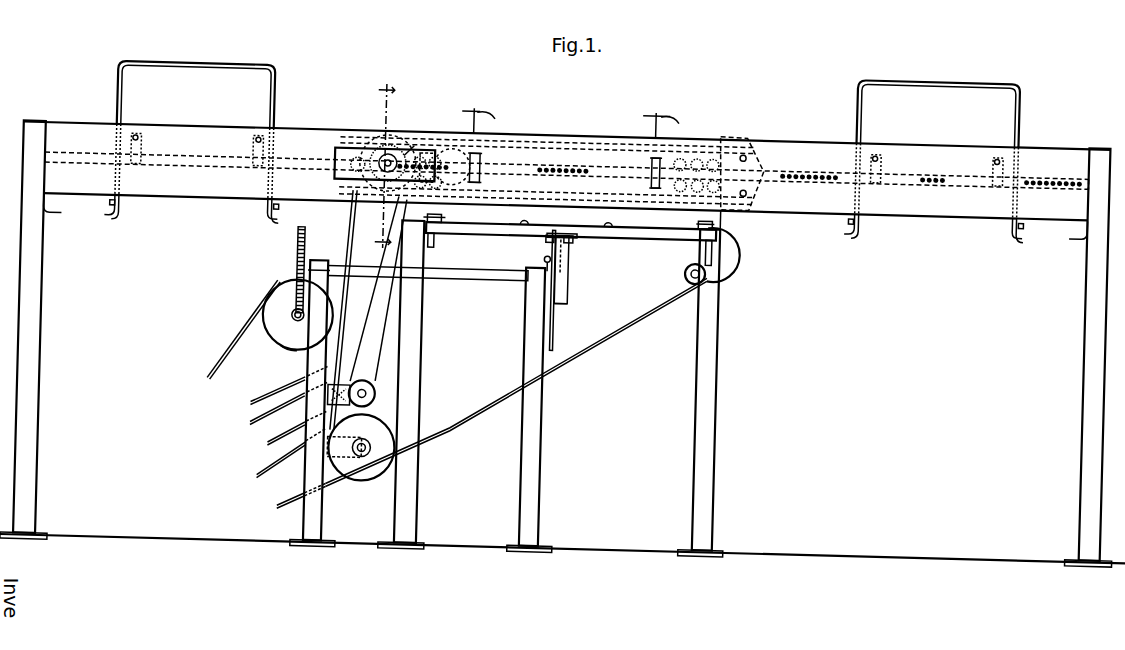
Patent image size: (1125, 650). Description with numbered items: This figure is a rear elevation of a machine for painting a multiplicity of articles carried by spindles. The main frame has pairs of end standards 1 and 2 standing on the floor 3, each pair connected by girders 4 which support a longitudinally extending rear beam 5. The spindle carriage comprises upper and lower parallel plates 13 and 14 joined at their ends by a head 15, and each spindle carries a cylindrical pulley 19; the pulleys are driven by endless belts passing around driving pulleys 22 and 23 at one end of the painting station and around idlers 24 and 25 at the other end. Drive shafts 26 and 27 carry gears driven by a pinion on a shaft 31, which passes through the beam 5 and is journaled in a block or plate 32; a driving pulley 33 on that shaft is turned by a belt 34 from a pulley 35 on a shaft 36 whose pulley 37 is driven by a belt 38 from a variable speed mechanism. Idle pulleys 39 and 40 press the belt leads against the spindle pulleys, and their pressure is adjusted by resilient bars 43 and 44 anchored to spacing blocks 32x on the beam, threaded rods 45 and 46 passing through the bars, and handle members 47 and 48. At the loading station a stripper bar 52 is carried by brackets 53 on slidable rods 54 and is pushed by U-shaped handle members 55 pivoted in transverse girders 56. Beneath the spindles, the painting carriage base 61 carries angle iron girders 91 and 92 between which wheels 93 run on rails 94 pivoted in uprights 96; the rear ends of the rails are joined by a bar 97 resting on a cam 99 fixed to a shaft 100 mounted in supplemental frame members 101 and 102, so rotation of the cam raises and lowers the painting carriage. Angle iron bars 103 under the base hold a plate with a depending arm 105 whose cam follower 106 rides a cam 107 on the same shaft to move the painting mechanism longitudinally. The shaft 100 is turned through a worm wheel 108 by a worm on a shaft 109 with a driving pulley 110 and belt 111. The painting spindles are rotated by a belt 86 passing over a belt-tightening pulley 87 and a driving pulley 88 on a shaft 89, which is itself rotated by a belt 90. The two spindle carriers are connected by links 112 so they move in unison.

The end standards 1 is at (36, 393).
The end standards 2 is at (385, 160).
The floor 3 is at (903, 534).
The girders 4 is at (42, 206).
The rear beam 5 is at (276, 123).
The upper plate 13 is at (982, 203).
The lower plate 14 is at (946, 160).
The head 15 is at (575, 162).
The pulley 19 is at (548, 160).
The driving pulley 22 is at (381, 126).
The driving pulley 23 is at (345, 210).
The idler 24 is at (739, 125).
The idler 25 is at (752, 198).
The drive shaft 26 is at (395, 142).
The drive shaft 27 is at (356, 176).
The shaft 31 is at (376, 153).
The block or plate 32 is at (340, 143).
The spacing blocks 32x is at (478, 153).
The driving pulley 33 is at (362, 135).
The belt 34 is at (342, 200).
The pulley 35 is at (371, 393).
The shaft 36 is at (367, 378).
The pulley 37 is at (357, 371).
The belt 38 is at (288, 398).
The idle pulleys 39 is at (445, 137).
The idle pulleys 40 is at (468, 169).
The resilient bar 43 is at (471, 143).
The resilient bar 44 is at (488, 171).
The rod 45 is at (681, 112).
The rod 46 is at (497, 107).
The handle member 47 is at (468, 107).
The handle member 48 is at (654, 114).
The bar 52 is at (205, 163).
The brackets 53 is at (132, 143).
The rods 54 is at (126, 131).
The U-shaped handle members 55 is at (184, 58).
The transverse girders 56 is at (110, 217).
The base 61 is at (514, 211).
The belt 86 is at (566, 346).
The belt-tightening pulley 87 is at (677, 257).
The driving pulley 88 is at (382, 462).
The shaft 89 is at (359, 447).
The belt 90 is at (260, 463).
The angle iron girders 91 is at (422, 222).
The angle iron girders 92 is at (730, 213).
The wheels 93 is at (445, 203).
The rails 94 is at (427, 232).
The uprights 96 is at (424, 305).
The bar or shaft 97 is at (483, 224).
The cam 99 is at (562, 250).
The shaft 100 is at (474, 268).
The supplemental frame member 101 is at (539, 424).
The supplemental frame member 102 is at (302, 512).
The angle iron bars 103 is at (541, 229).
The arm 105 is at (549, 308).
The cam follower 106 is at (537, 246).
The cam 107 is at (563, 288).
The worm wheel 108 is at (289, 245).
The shaft 109 is at (277, 338).
The driving pulley 110 is at (272, 291).
The belt 111 is at (238, 325).
The links 112 is at (782, 156).